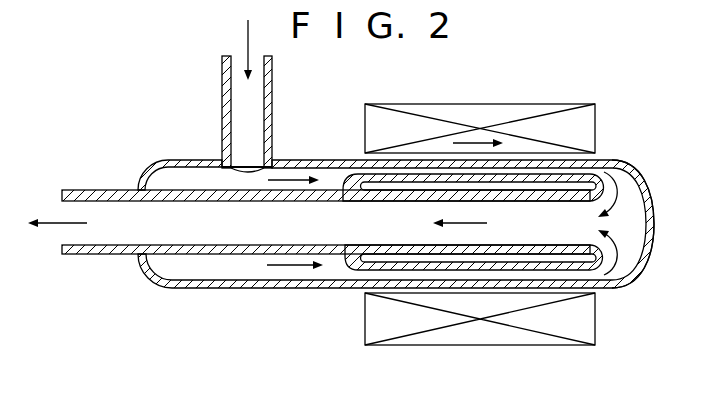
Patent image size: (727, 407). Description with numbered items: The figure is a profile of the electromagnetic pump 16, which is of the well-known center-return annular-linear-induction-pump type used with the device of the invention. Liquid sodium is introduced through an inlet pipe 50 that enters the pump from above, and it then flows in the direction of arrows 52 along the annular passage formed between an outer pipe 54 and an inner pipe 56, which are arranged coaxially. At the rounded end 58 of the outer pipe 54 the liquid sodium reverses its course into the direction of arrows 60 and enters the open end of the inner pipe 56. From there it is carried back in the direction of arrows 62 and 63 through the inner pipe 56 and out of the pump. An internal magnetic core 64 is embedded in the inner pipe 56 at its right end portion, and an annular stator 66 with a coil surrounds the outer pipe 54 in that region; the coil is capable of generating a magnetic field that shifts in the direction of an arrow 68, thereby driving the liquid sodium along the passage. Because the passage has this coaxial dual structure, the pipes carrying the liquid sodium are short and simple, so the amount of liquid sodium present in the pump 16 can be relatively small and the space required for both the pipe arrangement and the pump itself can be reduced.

The heat exchanger assembly 16 is at (176, 96).
The inlet pipe 50 is at (222, 110).
The arrows 52 is at (297, 178).
The outer pipe 54 is at (196, 289).
The inner pipe 56 is at (102, 190).
The end of the outer pipe 58 is at (649, 265).
The arrows 60 is at (620, 196).
The arrows 62 is at (487, 223).
The arrows 63 is at (49, 222).
The internal magnetic core 64 is at (591, 184).
The annular stator 66 is at (478, 104).
The arrow 68 is at (486, 132).